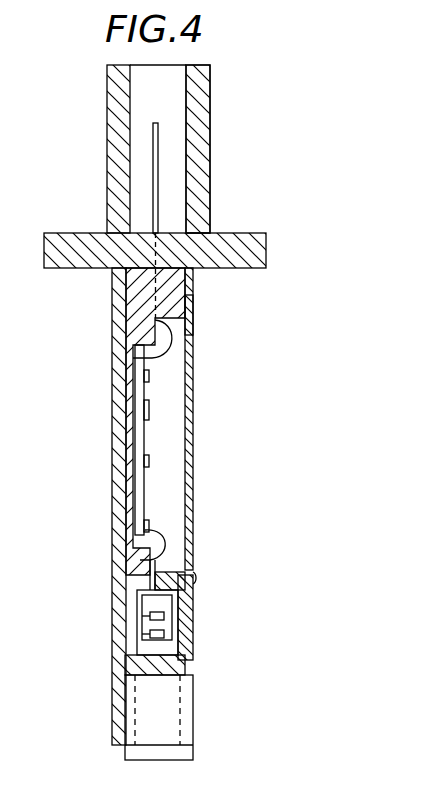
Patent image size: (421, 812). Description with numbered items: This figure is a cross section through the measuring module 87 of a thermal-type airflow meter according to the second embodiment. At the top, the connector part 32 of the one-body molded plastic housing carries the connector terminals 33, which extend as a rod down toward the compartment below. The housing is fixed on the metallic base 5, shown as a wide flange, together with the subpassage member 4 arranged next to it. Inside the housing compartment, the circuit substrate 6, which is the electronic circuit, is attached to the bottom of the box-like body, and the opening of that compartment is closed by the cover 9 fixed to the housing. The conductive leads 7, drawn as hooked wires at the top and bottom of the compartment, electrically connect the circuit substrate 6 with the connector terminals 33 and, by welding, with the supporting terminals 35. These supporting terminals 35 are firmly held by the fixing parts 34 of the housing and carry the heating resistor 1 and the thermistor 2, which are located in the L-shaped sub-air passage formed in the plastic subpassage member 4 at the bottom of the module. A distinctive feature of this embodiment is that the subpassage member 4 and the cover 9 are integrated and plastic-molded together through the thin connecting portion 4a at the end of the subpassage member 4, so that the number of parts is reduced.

The measuring module 87 is at (114, 99).
The connector part 32 is at (205, 176).
The connector terminals 33 is at (160, 121).
The supporting terminals 35 is at (272, 242).
The metallic base 5 is at (112, 522).
The cover 9 is at (186, 314).
The conductive leads 7 is at (186, 357).
The circuit substrate 6 is at (150, 435).
The thin connecting portion 4a is at (196, 579).
The fixing parts 34 is at (188, 602).
The thermistor 2 is at (150, 614).
The heating resistor 1 is at (150, 633).
The subpassage member 4 is at (125, 663).